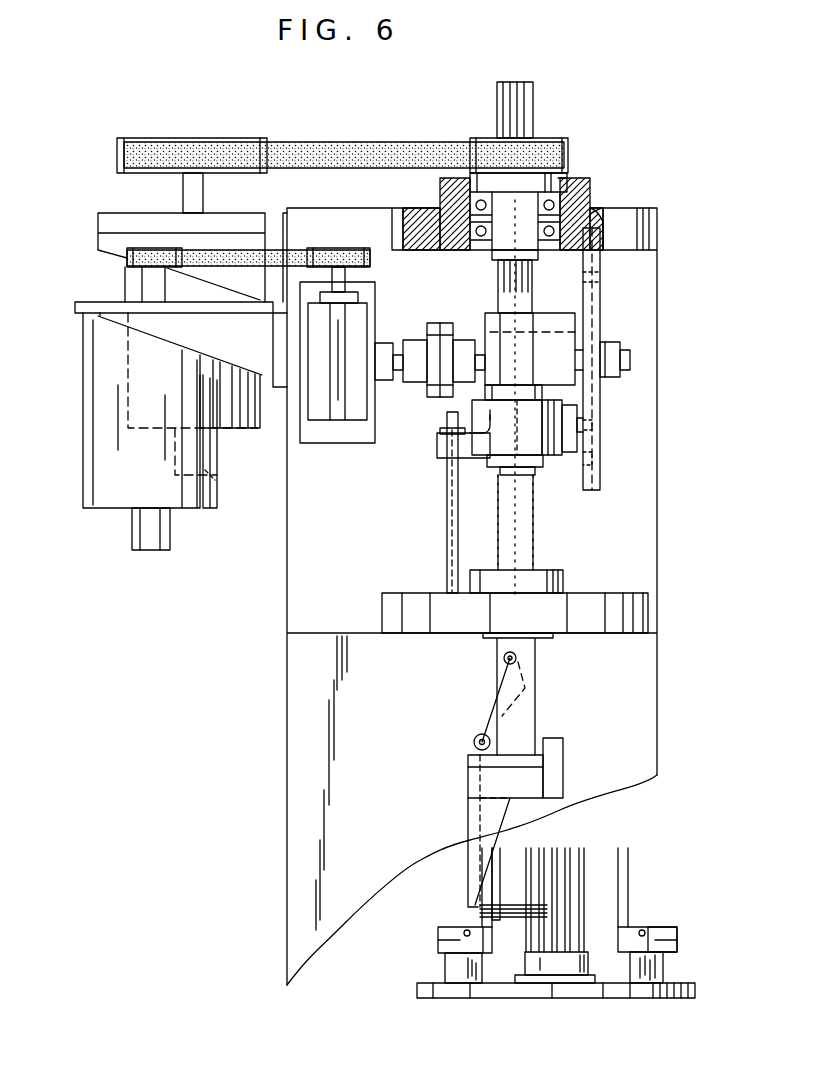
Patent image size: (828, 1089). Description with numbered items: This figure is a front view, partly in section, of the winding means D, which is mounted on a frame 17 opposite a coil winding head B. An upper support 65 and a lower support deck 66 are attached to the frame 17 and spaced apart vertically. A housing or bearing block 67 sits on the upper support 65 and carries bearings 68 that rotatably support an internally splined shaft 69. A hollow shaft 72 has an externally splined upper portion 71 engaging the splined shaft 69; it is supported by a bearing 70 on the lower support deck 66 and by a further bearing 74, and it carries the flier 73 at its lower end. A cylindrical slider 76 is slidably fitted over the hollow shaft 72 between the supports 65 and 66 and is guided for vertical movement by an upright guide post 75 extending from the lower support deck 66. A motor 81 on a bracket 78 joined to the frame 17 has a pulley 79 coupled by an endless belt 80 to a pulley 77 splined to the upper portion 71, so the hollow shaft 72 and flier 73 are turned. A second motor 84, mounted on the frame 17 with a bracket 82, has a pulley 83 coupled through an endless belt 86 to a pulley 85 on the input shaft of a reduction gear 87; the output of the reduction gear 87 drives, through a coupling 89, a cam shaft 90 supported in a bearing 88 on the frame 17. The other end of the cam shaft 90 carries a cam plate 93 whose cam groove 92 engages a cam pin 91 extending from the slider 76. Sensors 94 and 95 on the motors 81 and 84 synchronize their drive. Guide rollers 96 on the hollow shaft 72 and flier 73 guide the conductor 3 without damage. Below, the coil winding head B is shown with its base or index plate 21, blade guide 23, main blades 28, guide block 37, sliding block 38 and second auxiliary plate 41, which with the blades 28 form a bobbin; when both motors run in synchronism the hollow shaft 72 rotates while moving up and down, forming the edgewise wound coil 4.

The winding means D is at (287, 600).
The frame 17 is at (287, 778).
The upper support 65 is at (640, 226).
The housing or bearing block 67 is at (590, 190).
The internally splined shaft 69 is at (560, 185).
The bearings 68 is at (549, 236).
The externally splined upper portion 71 is at (533, 102).
The pulley 77 is at (568, 140).
The endless belt 80 is at (385, 150).
The pulley 79 is at (195, 138).
The bracket 78 is at (118, 216).
The pulley 85 is at (340, 248).
The pulley 83 is at (127, 258).
The endless belt 86 is at (370, 262).
The bracket 82 is at (85, 302).
The motor 81 is at (243, 418).
The motor 84 is at (212, 508).
The sensor 94 is at (215, 485).
The sensor 95 is at (160, 550).
The reduction gear 87 is at (338, 420).
The coupling 89 is at (435, 325).
The bearing 88 is at (490, 340).
The hollow shaft 72 is at (533, 530).
The cylindrical slider 76 is at (437, 446).
The upright guide post 75 is at (447, 518).
The collar 74 is at (540, 466).
The bearing 70 is at (565, 582).
The lower support deck 66 is at (382, 612).
The cam shaft 90 is at (610, 345).
The cam plate 93 is at (596, 490).
The cam pin 91 is at (586, 424).
The cam groove 92 is at (594, 458).
The guide rollers 96 is at (503, 660).
The conductor 3 is at (495, 705).
The flier 73 is at (478, 785).
The second auxiliary plate 41 is at (490, 892).
The edgewise wound coil 4 is at (500, 910).
The main blades 28 is at (570, 848).
The blade guide 23 is at (585, 968).
The guide block 37 is at (663, 968).
The sliding block 38 is at (677, 945).
The base or index plate 21 is at (417, 992).
The coil winding head B is at (500, 998).